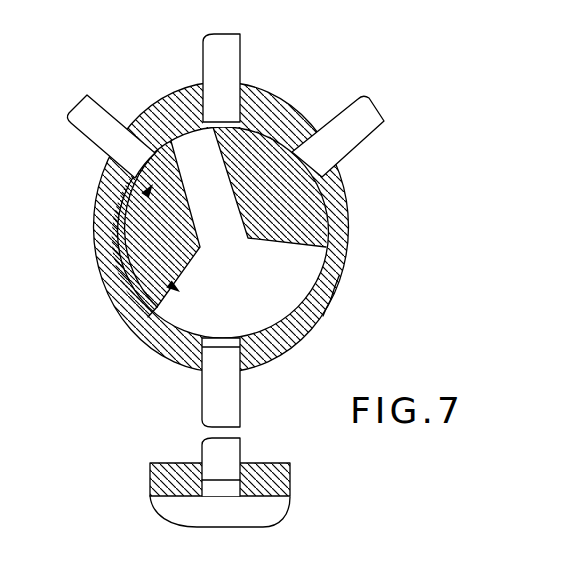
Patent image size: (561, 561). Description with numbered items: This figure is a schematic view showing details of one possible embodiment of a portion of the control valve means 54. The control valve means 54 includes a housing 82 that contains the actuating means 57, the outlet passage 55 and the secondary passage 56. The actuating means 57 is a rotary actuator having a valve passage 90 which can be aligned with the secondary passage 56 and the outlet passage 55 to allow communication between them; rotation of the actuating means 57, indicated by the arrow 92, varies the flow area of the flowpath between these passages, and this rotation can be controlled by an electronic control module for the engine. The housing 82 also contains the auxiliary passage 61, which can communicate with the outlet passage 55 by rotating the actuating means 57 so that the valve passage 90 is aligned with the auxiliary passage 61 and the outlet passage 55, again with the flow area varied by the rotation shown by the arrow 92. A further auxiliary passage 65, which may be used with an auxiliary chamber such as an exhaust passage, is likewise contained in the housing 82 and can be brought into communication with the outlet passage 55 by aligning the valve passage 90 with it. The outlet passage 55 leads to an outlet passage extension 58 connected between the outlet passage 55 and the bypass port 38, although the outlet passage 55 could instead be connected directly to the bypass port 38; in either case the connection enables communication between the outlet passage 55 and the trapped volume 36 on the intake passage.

The trapped volume 36 is at (273, 515).
The bypass port 38 is at (220, 497).
The control valve means 54 is at (90, 175).
The outlet passage 55 is at (223, 360).
The secondary passage 56 is at (217, 103).
The actuating means 57 is at (296, 207).
The outlet passage extension 58 is at (220, 458).
The auxiliary passage 61 is at (325, 155).
The auxiliary passage 65 is at (130, 155).
The housing 82 is at (331, 290).
The valve passage 90 is at (230, 258).
The arrow 92 is at (111, 268).